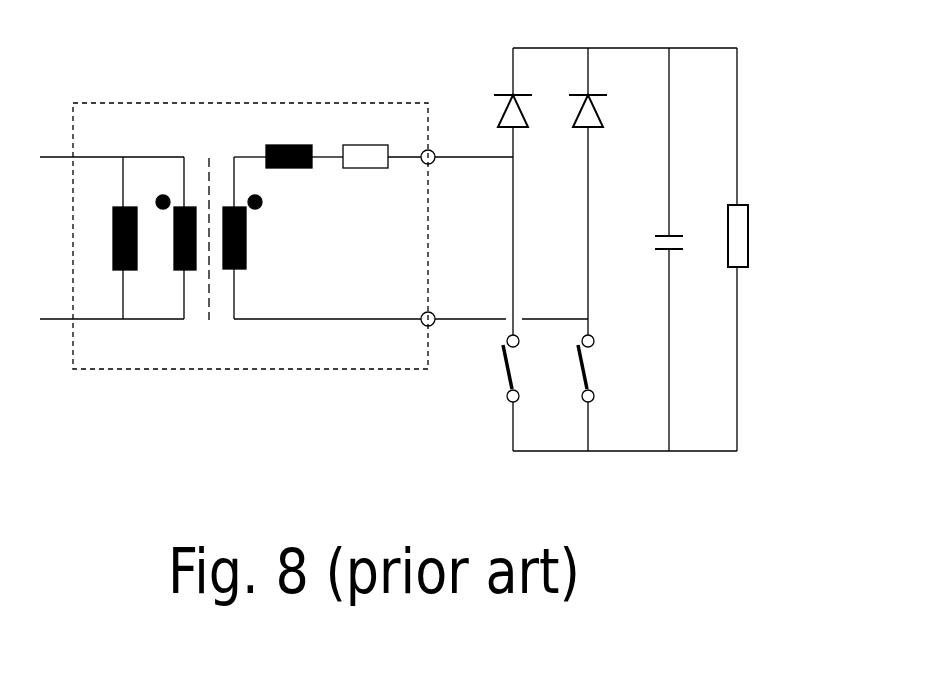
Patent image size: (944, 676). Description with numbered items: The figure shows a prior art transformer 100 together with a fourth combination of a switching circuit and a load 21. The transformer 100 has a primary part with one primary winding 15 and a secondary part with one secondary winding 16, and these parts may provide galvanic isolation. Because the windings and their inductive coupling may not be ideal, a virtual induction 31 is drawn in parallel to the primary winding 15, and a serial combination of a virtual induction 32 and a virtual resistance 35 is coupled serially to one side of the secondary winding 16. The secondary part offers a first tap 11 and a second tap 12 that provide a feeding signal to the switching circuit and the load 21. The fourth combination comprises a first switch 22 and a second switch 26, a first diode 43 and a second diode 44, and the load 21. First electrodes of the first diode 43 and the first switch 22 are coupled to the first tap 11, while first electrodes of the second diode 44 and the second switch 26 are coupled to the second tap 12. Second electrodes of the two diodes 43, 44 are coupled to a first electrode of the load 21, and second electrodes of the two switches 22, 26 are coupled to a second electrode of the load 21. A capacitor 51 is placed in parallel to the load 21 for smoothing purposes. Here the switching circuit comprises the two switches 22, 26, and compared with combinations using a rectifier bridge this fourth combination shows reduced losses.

The transformer 100 is at (393, 369).
The virtual induction 31 is at (111, 238).
The primary winding 15 is at (175, 238).
The secondary winding 16 is at (322, 238).
The virtual induction 32 is at (304, 142).
The virtual resistance 35 is at (382, 142).
The second tap 12 is at (433, 152).
The first tap 11 is at (433, 324).
The second diode 44 is at (528, 191).
The first diode 43 is at (602, 191).
The second switch 26 is at (513, 373).
The first switch 22 is at (588, 373).
The capacitor 51 is at (671, 253).
The load 21 is at (748, 235).